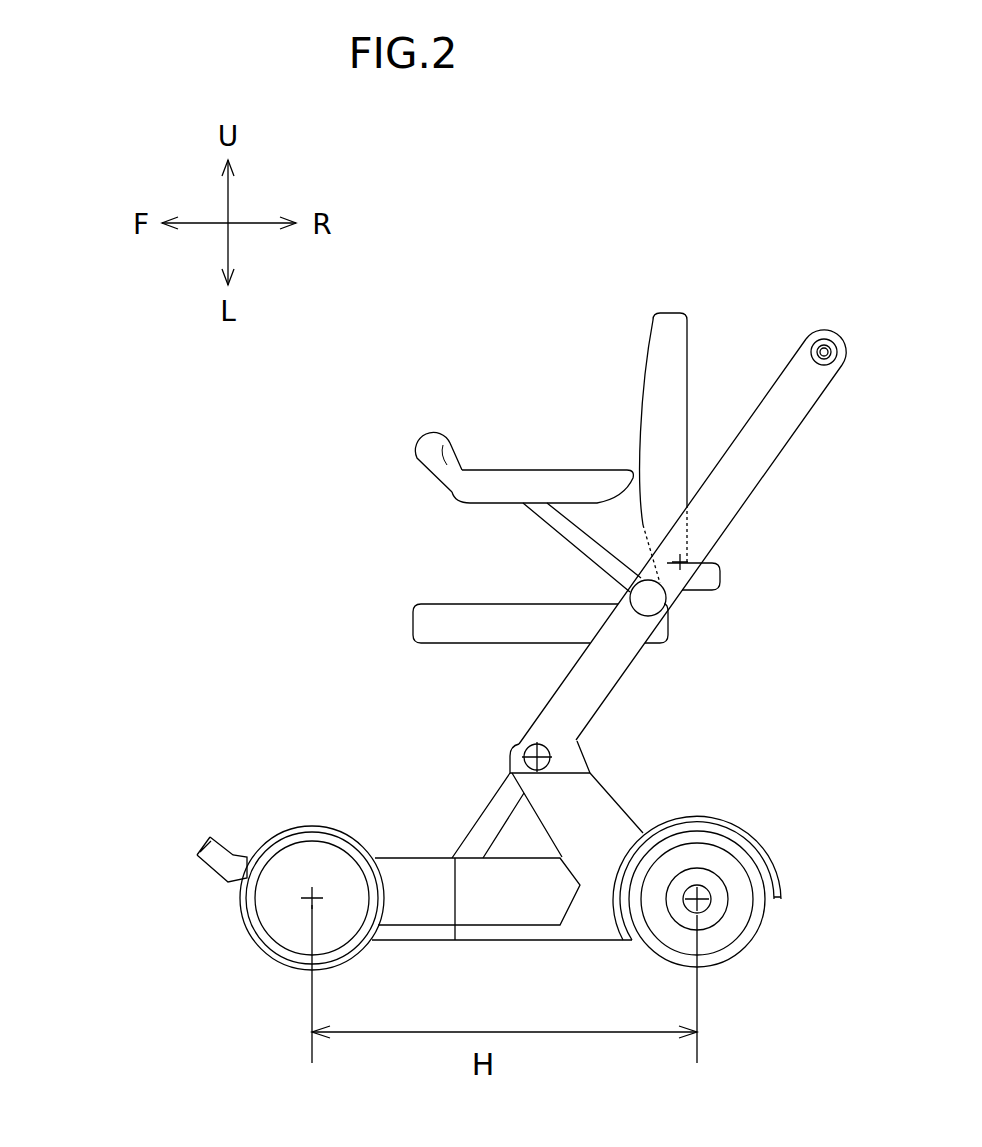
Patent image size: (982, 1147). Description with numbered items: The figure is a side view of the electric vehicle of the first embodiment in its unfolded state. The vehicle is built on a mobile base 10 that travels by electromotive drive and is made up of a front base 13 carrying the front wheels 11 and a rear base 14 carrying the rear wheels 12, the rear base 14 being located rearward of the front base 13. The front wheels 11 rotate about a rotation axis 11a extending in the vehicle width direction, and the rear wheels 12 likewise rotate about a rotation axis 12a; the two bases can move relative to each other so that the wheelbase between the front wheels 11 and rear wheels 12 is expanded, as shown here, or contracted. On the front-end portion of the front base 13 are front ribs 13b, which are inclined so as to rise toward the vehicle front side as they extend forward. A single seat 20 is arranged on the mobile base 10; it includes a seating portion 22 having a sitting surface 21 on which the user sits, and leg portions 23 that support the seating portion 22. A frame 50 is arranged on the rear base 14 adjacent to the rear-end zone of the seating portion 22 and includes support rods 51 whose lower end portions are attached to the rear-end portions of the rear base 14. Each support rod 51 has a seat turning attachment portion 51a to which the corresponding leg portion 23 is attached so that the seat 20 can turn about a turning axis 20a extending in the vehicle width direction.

The mobile base 10 is at (325, 814).
The front wheels 11 is at (260, 943).
The rotation axis 11a is at (312, 898).
The rear wheels 12 is at (750, 947).
The rotation axis 12a is at (700, 898).
The front base 13 is at (282, 830).
The front ribs 13b is at (197, 852).
The rear base 14 is at (703, 815).
The seat 20 is at (409, 598).
The turning axis 20a is at (582, 738).
The sitting surface 21 is at (483, 604).
The seating portion 22 is at (427, 632).
The leg portions 23 is at (503, 810).
The frame 50 is at (763, 362).
The support rods 51 is at (752, 471).
The seat turning attachment portions 51a is at (520, 745).